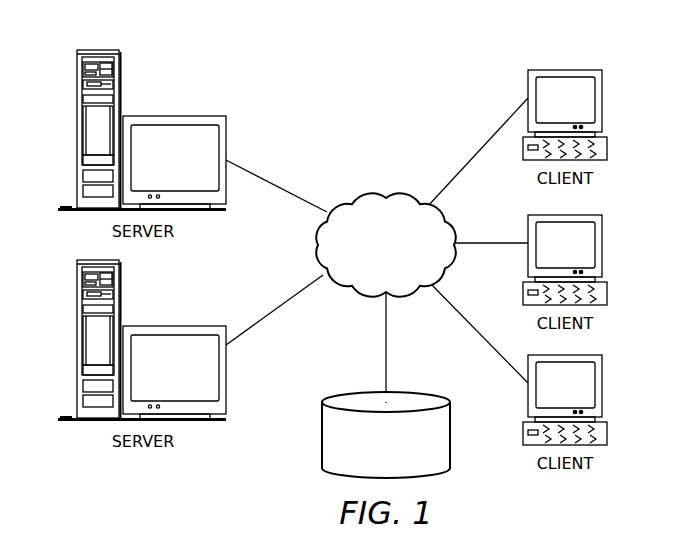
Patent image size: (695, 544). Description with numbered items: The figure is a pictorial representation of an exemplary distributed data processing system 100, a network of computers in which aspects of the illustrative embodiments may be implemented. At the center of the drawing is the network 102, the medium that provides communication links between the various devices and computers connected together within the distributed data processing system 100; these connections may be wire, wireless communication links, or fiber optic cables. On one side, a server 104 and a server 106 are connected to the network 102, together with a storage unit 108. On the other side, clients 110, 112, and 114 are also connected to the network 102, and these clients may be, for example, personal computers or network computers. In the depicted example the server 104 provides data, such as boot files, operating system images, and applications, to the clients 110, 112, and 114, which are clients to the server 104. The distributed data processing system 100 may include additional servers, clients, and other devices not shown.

The distributed data processing system 100 is at (437, 61).
The network 102 is at (357, 196).
The server 104 is at (77, 131).
The server 106 is at (77, 343).
The storage unit 108 is at (322, 435).
The client 110 is at (602, 100).
The client 112 is at (602, 243).
The client 114 is at (602, 388).